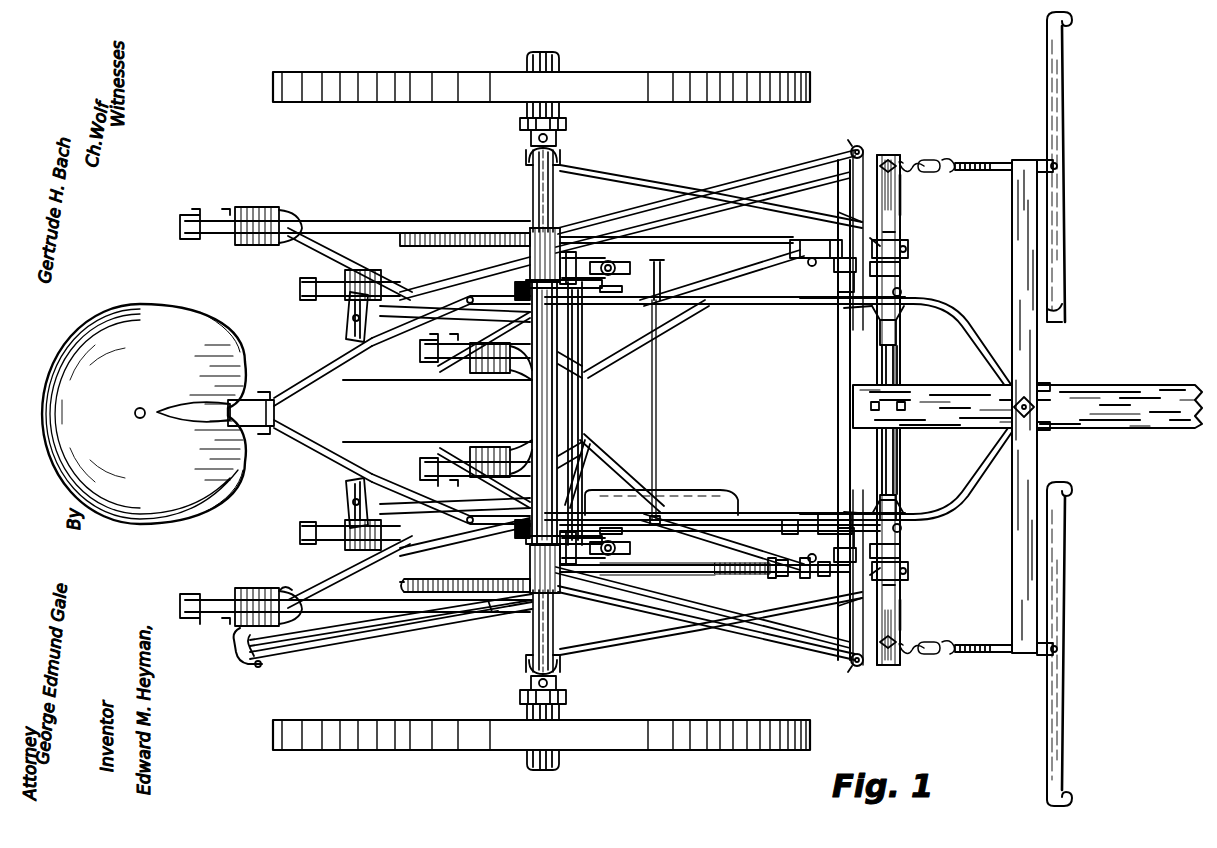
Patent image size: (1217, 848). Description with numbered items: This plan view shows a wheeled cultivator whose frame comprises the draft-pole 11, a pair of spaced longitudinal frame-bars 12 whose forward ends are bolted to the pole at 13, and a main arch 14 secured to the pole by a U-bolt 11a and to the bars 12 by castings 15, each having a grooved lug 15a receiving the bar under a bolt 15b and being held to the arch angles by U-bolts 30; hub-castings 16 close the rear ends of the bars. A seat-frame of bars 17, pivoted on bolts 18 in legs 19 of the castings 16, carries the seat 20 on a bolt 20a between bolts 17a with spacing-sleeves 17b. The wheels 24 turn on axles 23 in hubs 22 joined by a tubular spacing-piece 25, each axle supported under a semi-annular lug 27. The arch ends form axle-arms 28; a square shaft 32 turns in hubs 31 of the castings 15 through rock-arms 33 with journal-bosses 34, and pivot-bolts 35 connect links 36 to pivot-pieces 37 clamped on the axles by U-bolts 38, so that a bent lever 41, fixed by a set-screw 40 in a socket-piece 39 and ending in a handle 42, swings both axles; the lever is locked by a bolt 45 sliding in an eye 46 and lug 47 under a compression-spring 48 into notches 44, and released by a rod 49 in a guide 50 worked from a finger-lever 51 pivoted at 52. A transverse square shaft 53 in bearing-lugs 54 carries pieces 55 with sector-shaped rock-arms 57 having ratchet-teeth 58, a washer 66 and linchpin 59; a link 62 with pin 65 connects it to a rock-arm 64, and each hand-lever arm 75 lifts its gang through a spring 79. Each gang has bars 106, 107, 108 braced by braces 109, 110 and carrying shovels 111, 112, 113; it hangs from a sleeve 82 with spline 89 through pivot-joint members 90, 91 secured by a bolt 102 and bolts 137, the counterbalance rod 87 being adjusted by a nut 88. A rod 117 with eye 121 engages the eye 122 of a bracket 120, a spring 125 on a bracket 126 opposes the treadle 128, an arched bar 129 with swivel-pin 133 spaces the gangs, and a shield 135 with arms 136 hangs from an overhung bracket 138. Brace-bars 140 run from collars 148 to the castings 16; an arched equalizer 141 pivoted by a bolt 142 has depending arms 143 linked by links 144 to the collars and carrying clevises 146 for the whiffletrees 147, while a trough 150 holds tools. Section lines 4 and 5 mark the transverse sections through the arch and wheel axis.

The section line 4 is at (887, 750).
The section line 5 is at (538, 793).
The draft-pole 11 is at (1027, 406).
The U-bolt 11a is at (901, 402).
The longitudinal frame-bars 12 is at (778, 305).
The bolted forward ends 13 is at (1048, 384).
The main arch 14 is at (897, 458).
The castings 15 is at (898, 312).
The grooved lug 15a is at (878, 316).
The bolt 15b is at (884, 336).
The hub-castings 16 is at (522, 300).
The seat-frame bars 17 is at (322, 374).
The bolts 17a is at (265, 395).
The spacing-sleeves 17b is at (274, 412).
The pivot-bolts 18 is at (458, 346).
The legs 19 is at (472, 298).
The seat 20 is at (144, 414).
The bolt 20a is at (138, 419).
The hubs 22 is at (537, 246).
The axles 23 is at (554, 203).
The wheel 24 is at (541, 411).
The tubular spacing-piece 25 is at (533, 410).
The semi-annular lug 27 is at (538, 228).
The axle-arms 28 is at (900, 162).
The U-bolts 30 is at (903, 290).
The hub 31 is at (834, 268).
The square shaft 32 is at (839, 352).
The rock-arms 33 is at (880, 240).
The journal-boss 34 is at (844, 284).
The pivot-bolt 35 is at (878, 226).
The link 36 is at (640, 175).
The pivot-piece 37 is at (533, 160).
The U-bolt 38 is at (558, 152).
The socket-piece 39 is at (826, 576).
The set-screw 40 is at (806, 578).
The bent lever 41 is at (462, 626).
The handle 42 is at (234, 645).
The notches 44 is at (783, 576).
The bolt 45 is at (771, 578).
The eye 46 is at (742, 562).
The perforated lug 47 is at (715, 566).
The compression-spring 48 is at (722, 574).
The rod 49 is at (390, 632).
The perforated guide 50 is at (488, 606).
The finger-lever 51 is at (263, 641).
The pivot 52 is at (260, 666).
The transverse square shaft 53 is at (578, 412).
The bearing-lugs 54 is at (600, 286).
The pieces 55 is at (620, 288).
The sector-shaped rock-arm 57 is at (522, 260).
The ratchet-teeth 58 is at (526, 286).
The linchpin 59 is at (580, 262).
The link 62 is at (694, 525).
The rock-arm 64 is at (820, 516).
The pin 65 is at (790, 520).
The washer 66 is at (590, 268).
The forwardly-projecting arm 75 is at (612, 270).
The spring 79 is at (624, 280).
The sleeve 82 is at (900, 180).
The rod 87 is at (846, 310).
The nut 88 is at (900, 272).
The spline 89 is at (896, 240).
The pivot-joint member 90 is at (895, 246).
The pivot-joint member 91 is at (805, 240).
The bolt 102 is at (582, 470).
The longitudinal frame-bar 106 is at (393, 217).
The longitudinal frame-bar 107 is at (693, 290).
The longitudinal frame-bar 108 is at (468, 281).
The brace 109 is at (322, 252).
The brace 110 is at (487, 352).
The shovel 111 is at (278, 216).
The shovel 112 is at (508, 370).
The shovel 113 is at (383, 272).
The rod 117 is at (740, 186).
The bracket 120 is at (854, 212).
The eye 121 is at (852, 150).
The eye 122 is at (855, 146).
The retractile coiled spring 125 is at (404, 586).
The bracket 126 is at (286, 588).
The treadle 128 is at (352, 330).
The arched bar 129 is at (657, 412).
The swivel-pin 133 is at (657, 290).
The shield 135 is at (383, 440).
The arms 136 is at (690, 325).
The bolts 137 is at (808, 266).
The overhung bracket 138 is at (574, 360).
The brace-bars 140 is at (715, 212).
The arched equalizer 141 is at (1036, 356).
The bolt 142 is at (1034, 405).
The depending arms 143 is at (990, 164).
The links 144 is at (930, 162).
The clevises 146 is at (1040, 160).
The whiffletrees 147 is at (1060, 136).
The collars 148 is at (858, 158).
The trough 150 is at (718, 492).